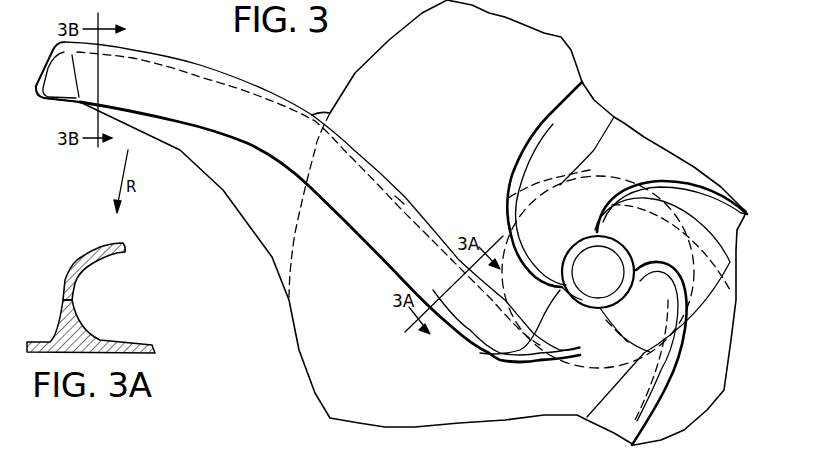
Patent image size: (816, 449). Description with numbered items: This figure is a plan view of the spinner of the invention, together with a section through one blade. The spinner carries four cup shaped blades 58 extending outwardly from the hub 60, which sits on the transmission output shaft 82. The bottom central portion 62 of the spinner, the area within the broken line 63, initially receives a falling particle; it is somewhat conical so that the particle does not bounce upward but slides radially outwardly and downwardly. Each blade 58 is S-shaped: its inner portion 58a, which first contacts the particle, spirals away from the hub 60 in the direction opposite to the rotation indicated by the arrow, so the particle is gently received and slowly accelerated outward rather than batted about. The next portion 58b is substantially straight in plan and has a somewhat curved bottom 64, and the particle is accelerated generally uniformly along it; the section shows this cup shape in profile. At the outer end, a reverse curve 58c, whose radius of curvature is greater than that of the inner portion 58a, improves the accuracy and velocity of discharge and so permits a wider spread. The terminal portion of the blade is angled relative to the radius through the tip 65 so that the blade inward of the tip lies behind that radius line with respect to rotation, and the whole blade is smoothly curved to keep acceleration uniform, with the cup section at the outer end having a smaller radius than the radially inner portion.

In FIG. 3, the cup shaped blade 58 is at (362, 147).
In FIG. 3, the initial portion of blade 58a is at (584, 356).
In FIG. 3, the straight portion of blade 58b is at (400, 200).
In FIG. 3A, the straight portion of blade 58b is at (68, 277).
In FIG. 3, the reverse curve 58c is at (215, 72).
In FIG. 3, the hub 60 is at (613, 243).
In FIG. 3, the bottom central portion 62 is at (568, 235).
In FIG. 3, the broken line 63 is at (588, 170).
In FIG. 3, the curved bottom 64 is at (344, 277).
In FIG. 3A, the curved bottom 64 is at (138, 342).
In FIG. 3, the tip of blade 65 is at (80, 100).
In FIG. 3, the output shaft 82 is at (585, 283).